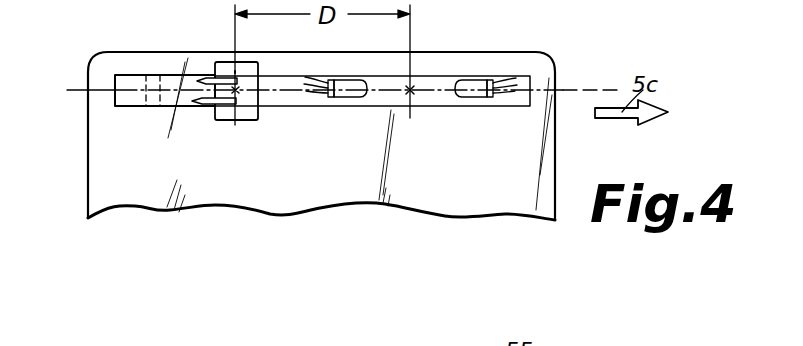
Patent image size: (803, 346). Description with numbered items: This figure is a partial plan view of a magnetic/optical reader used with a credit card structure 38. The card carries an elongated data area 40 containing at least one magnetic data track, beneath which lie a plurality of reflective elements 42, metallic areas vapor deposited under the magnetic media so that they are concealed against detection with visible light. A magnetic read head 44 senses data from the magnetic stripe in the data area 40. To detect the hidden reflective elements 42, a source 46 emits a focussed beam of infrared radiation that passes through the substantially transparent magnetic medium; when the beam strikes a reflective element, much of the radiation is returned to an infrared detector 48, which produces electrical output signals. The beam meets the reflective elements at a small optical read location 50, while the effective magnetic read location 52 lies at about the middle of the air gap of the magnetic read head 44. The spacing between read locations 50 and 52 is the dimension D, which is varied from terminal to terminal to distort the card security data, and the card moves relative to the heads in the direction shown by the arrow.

The credit card structure 38 is at (522, 201).
The elongated data area 40 is at (115, 96).
The reflective elements 42 is at (146, 106).
The magnetic read head 44 is at (226, 62).
The source 46 is at (343, 98).
The infrared detector 48 is at (467, 98).
The optical read location 50 is at (416, 93).
The magnetic read location 52 is at (239, 92).